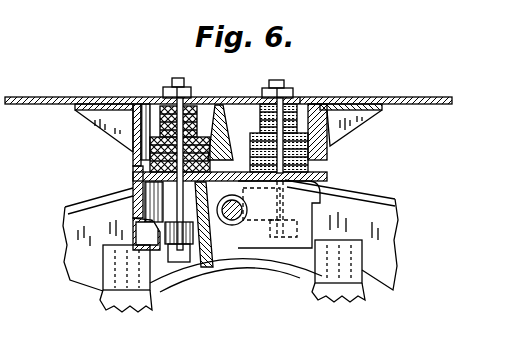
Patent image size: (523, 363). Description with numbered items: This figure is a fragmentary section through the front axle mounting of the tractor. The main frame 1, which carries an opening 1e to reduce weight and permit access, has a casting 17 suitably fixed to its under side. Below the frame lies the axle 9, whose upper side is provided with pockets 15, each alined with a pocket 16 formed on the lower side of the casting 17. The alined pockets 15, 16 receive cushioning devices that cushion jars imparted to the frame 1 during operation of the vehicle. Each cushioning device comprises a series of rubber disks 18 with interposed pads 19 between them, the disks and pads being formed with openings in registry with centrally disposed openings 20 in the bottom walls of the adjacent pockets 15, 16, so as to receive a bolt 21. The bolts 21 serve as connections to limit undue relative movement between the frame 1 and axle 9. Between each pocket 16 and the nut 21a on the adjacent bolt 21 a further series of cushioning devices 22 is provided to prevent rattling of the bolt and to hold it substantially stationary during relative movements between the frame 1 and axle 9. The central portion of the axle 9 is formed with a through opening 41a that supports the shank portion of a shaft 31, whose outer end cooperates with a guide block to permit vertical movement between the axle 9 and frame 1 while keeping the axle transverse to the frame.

The main frame 1 is at (421, 97).
The opening 1e is at (299, 97).
The axle 9 is at (370, 200).
The pocket 15 is at (146, 234).
The pocket 16 is at (322, 142).
The casting 17 is at (356, 112).
The rubber disks 18 is at (143, 163).
The pads 19 is at (140, 178).
The openings 20 is at (313, 105).
The bolt 21 is at (201, 258).
The nut 21a is at (266, 92).
The cushioning devices 22 is at (199, 108).
The shaft 31 is at (233, 226).
The through opening 41a is at (217, 252).